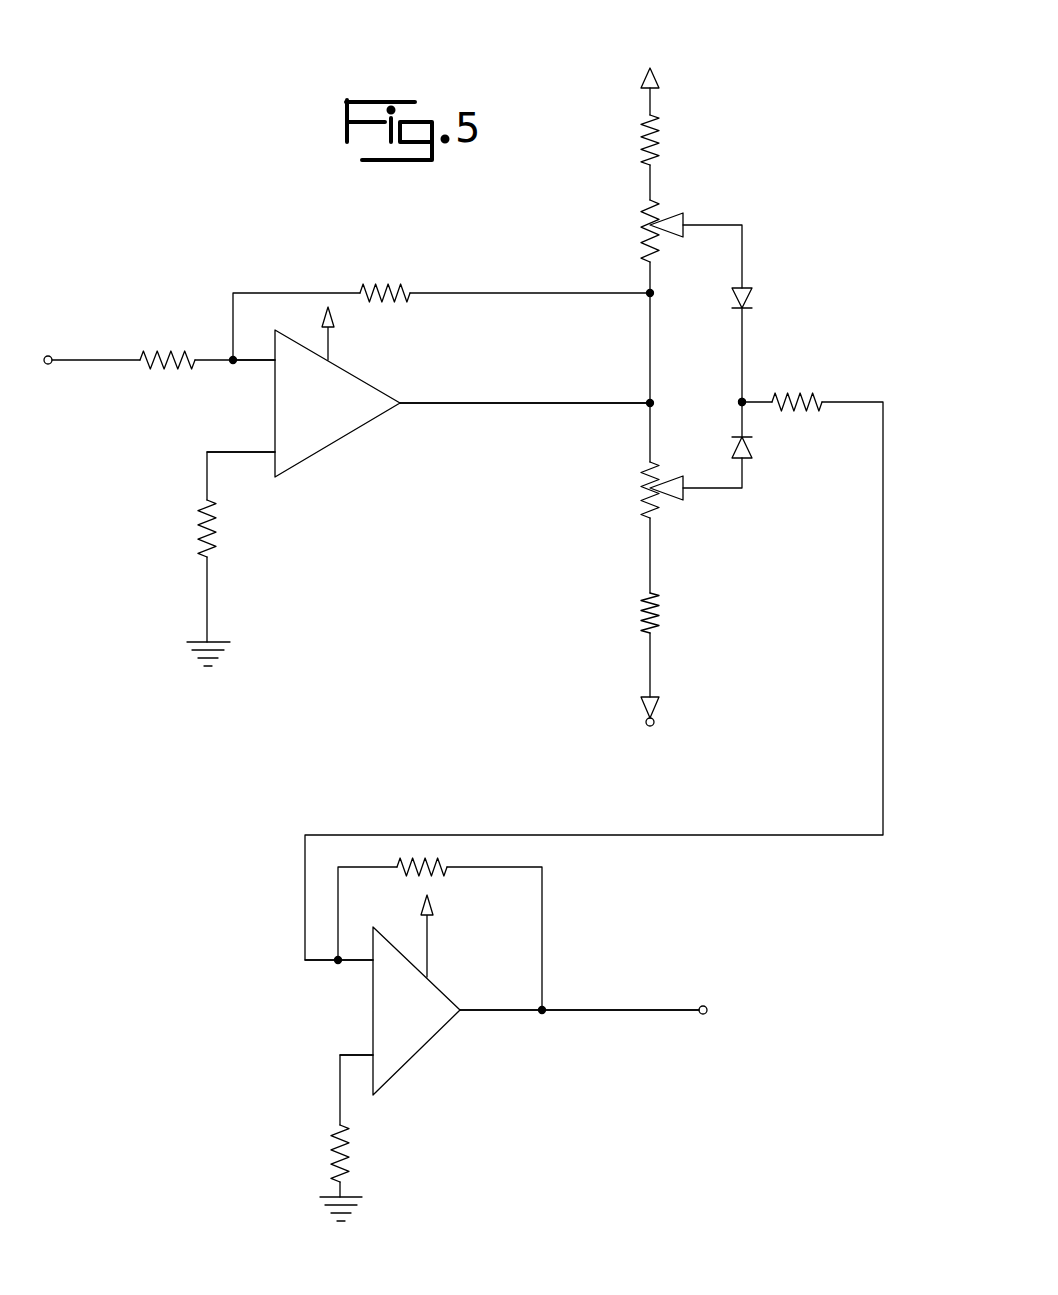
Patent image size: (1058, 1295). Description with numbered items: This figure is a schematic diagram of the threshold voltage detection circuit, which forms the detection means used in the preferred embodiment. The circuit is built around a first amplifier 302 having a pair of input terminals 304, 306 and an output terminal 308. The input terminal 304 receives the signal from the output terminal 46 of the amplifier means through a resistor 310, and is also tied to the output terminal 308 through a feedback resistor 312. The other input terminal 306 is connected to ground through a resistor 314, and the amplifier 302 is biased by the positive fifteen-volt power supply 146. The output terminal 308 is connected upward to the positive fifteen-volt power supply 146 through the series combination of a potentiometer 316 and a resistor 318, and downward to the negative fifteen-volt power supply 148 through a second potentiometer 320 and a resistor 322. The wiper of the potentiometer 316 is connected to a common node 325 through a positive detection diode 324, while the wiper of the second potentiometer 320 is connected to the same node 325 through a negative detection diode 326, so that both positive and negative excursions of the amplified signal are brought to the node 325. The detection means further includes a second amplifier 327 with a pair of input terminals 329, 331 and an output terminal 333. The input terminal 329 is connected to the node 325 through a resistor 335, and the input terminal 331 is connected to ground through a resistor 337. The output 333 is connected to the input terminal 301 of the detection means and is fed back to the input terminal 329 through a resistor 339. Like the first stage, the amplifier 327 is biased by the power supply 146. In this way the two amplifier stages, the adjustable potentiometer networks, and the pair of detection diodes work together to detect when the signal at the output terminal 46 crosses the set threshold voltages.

The output terminal 46 is at (50, 355).
The positive 15-volt power supply 146 is at (336, 318).
The negative 15-volt power supply 148 is at (646, 725).
The input terminal 301 is at (663, 1009).
The amplifier 302 is at (345, 374).
The input terminal 304 is at (256, 372).
The input terminal 306 is at (242, 455).
The output terminal 308 is at (553, 405).
The resistor 310 is at (170, 372).
The resistor 312 is at (385, 284).
The resistor 314 is at (205, 538).
The potentiometer 316 is at (655, 208).
The resistor 318 is at (655, 125).
The potentiometer 320 is at (646, 500).
The resistor 322 is at (660, 615).
The positive detection diode 324 is at (752, 300).
The node 325 is at (742, 405).
The negative detection diode 326 is at (752, 455).
The amplifier 327 is at (418, 1042).
The input terminal 329 is at (325, 963).
The input terminal 331 is at (338, 1072).
The output terminal 333 is at (522, 1012).
The resistor 335 is at (803, 393).
The resistor 337 is at (335, 1145).
The resistor 339 is at (433, 875).